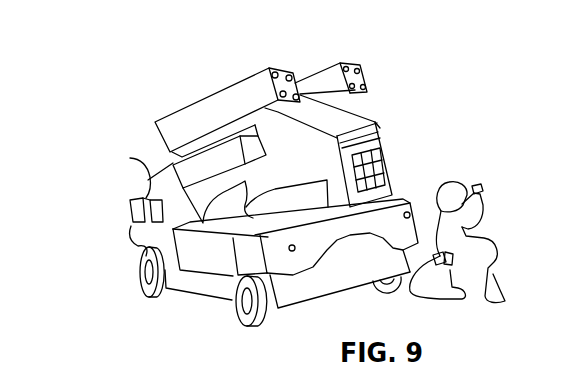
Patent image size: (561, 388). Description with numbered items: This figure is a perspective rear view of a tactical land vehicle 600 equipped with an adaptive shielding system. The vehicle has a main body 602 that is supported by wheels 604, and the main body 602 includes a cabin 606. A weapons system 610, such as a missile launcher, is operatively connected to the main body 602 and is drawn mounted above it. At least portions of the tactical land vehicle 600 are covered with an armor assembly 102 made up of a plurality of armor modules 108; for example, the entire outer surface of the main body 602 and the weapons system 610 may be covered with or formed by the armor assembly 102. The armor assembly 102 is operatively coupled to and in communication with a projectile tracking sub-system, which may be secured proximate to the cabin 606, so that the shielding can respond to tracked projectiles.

The tactical land vehicle 600 is at (168, 93).
The weapons system 610 is at (330, 80).
The main body 602 is at (163, 180).
The cabin 606 is at (130, 232).
The wheels 604 is at (153, 297).
The armor assembly 102 is at (390, 170).
The armor modules 108 is at (382, 148).